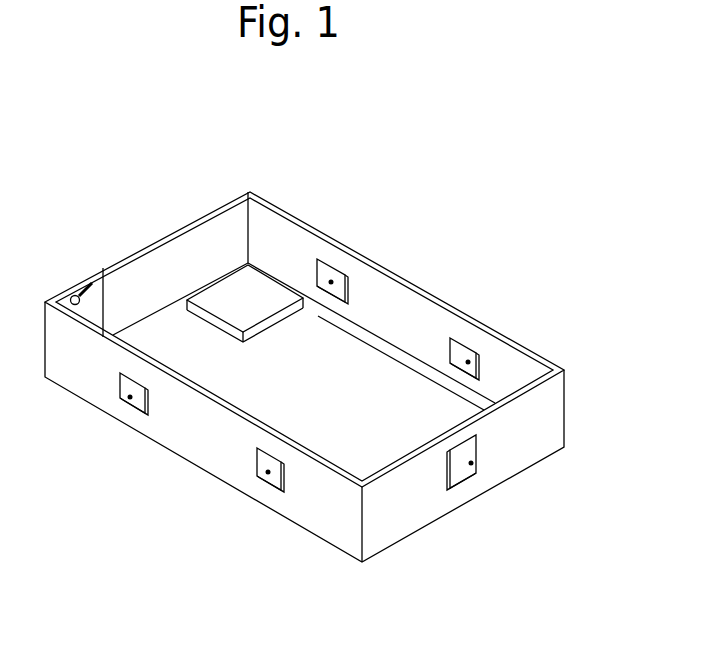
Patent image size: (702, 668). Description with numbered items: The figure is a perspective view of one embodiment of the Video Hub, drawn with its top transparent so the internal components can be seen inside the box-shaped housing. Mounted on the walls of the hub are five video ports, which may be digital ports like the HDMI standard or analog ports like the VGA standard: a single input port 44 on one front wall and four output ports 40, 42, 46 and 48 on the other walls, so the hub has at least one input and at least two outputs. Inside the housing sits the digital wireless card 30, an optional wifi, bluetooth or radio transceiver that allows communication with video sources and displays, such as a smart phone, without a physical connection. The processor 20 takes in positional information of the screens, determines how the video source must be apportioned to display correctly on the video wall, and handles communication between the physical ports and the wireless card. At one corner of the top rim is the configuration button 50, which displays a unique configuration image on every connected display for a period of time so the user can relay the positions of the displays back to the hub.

The processor 20 is at (362, 459).
The digital wireless card 30 is at (263, 293).
The output port 40 is at (128, 398).
The output port 42 is at (266, 473).
The input port 44 is at (476, 468).
The output port 46 is at (479, 351).
The output port 48 is at (340, 268).
The configuration button 50 is at (92, 283).